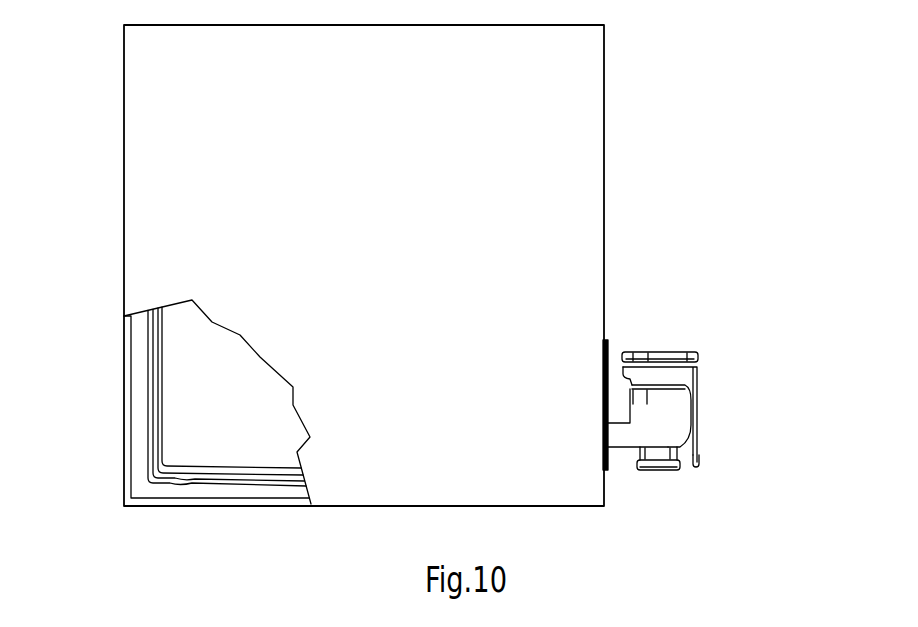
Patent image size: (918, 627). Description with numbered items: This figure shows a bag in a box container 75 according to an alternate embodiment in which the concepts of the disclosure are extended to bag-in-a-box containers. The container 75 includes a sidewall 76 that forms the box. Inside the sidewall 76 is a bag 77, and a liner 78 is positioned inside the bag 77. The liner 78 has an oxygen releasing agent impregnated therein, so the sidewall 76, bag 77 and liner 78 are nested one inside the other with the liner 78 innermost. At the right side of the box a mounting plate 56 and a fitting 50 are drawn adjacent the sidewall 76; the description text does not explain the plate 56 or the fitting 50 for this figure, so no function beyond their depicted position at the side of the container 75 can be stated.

The bag in a box container 75 is at (704, 114).
The sidewall 76 is at (123, 422).
The bag 77 is at (180, 480).
The liner 78 is at (210, 470).
The mounting plate 56 is at (610, 360).
The fitting 50 is at (692, 326).